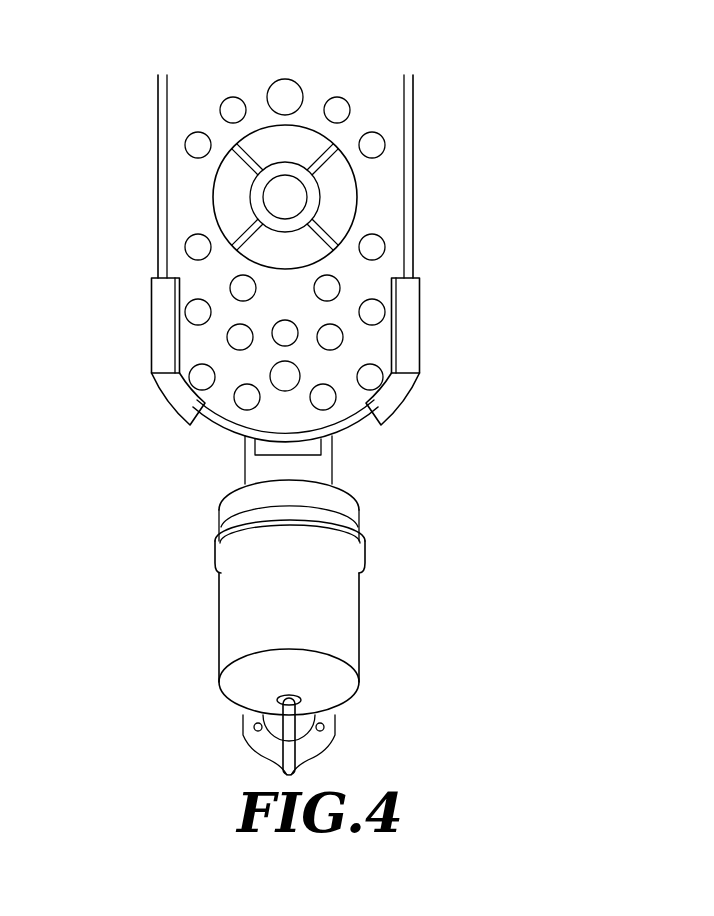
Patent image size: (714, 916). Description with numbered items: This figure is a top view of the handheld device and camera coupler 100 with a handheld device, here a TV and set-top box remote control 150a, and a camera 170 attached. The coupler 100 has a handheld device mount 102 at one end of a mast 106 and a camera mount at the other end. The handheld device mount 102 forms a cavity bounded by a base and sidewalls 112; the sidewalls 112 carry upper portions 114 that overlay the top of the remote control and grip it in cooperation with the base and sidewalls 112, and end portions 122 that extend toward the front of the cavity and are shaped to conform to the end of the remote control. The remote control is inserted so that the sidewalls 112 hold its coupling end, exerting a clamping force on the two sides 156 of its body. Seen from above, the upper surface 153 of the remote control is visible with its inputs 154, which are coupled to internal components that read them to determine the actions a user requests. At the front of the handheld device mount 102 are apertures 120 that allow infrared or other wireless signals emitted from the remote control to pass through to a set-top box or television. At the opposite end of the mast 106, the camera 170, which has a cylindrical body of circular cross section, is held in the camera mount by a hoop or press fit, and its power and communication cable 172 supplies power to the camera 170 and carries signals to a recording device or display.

The handheld device and camera coupler 100 is at (528, 282).
The handheld device mount 102 is at (537, 328).
The mast 106 is at (362, 488).
The sidewalls 112 is at (137, 298).
The upper portions 114 is at (161, 284).
The apertures 120 is at (313, 448).
The end portions 122 is at (141, 414).
The head 150a is at (466, 128).
The upper surface 153 is at (386, 105).
The inputs 154 is at (345, 203).
The sides 156 is at (157, 143).
The camera 170 is at (347, 613).
The power and communication cable 172 is at (288, 752).